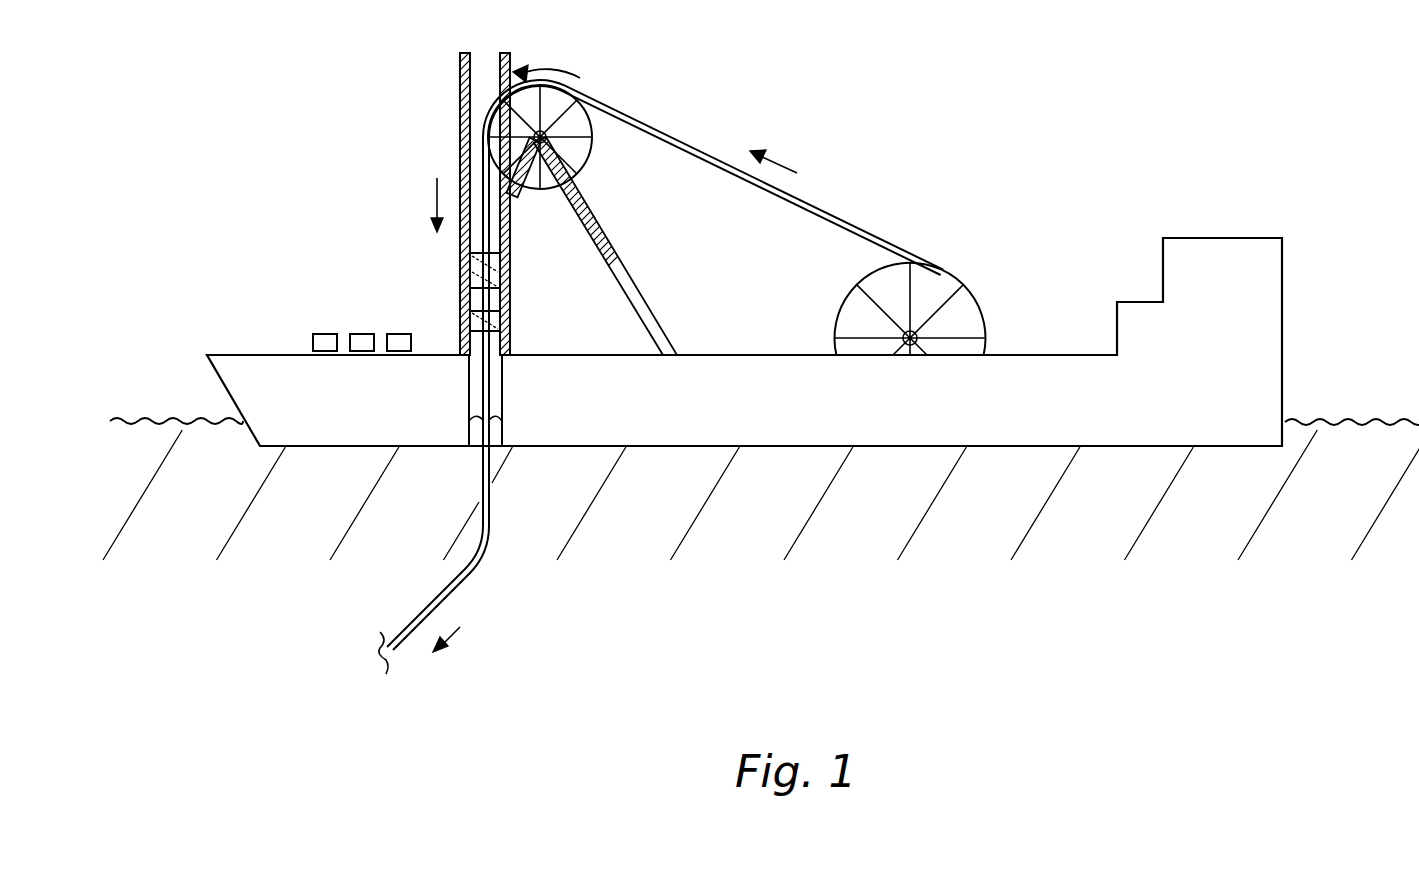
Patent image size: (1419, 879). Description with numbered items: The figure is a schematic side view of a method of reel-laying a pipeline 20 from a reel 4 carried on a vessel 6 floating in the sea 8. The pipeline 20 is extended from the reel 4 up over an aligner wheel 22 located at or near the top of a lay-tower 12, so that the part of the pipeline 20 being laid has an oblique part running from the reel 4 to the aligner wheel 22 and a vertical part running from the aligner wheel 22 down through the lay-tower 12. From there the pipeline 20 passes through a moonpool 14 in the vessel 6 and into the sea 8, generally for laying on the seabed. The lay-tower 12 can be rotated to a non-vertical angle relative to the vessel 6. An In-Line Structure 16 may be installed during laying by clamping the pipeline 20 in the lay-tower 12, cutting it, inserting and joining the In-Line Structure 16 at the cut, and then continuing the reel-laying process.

The reel 4 is at (978, 303).
The vessel 6 is at (1213, 395).
The sea 8 is at (856, 598).
The lay-tower 12 is at (460, 137).
The moonpool 14 is at (468, 405).
The In-Line Structure (ILS) 16 is at (398, 334).
The pipeline 20 is at (840, 216).
The aligner wheel 22 is at (592, 157).